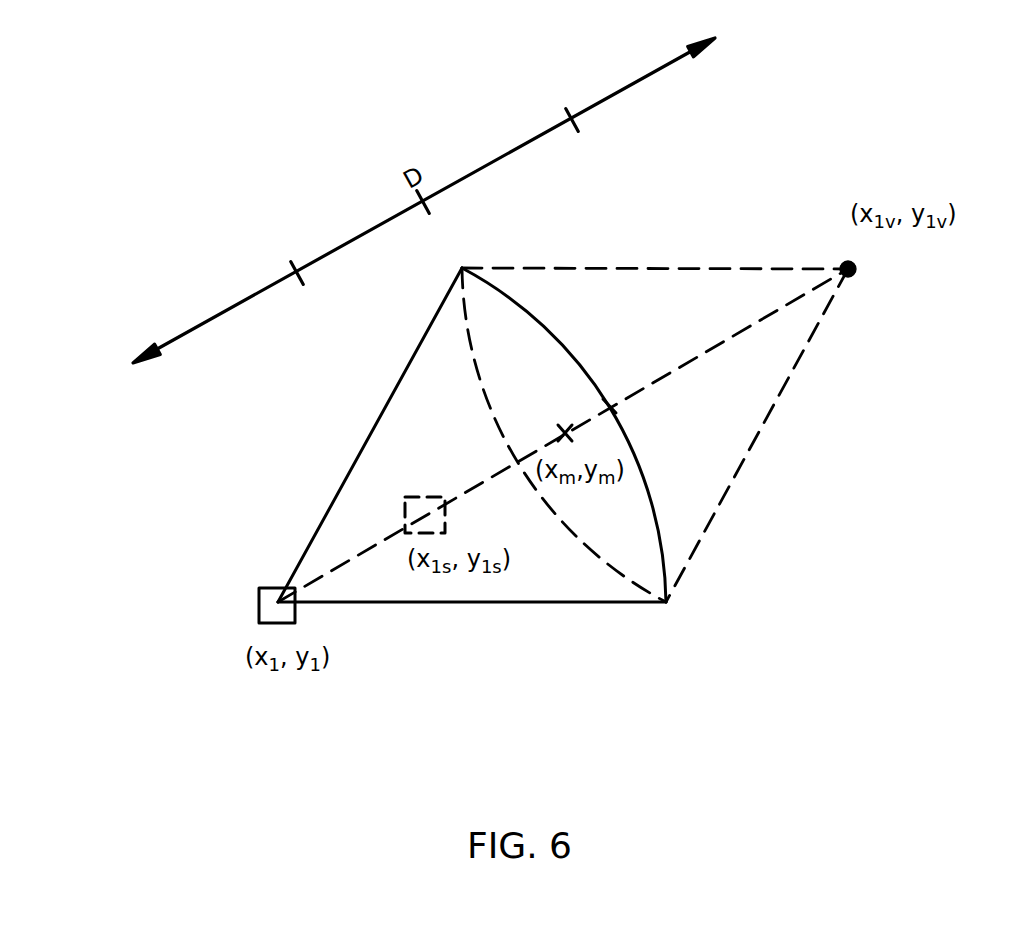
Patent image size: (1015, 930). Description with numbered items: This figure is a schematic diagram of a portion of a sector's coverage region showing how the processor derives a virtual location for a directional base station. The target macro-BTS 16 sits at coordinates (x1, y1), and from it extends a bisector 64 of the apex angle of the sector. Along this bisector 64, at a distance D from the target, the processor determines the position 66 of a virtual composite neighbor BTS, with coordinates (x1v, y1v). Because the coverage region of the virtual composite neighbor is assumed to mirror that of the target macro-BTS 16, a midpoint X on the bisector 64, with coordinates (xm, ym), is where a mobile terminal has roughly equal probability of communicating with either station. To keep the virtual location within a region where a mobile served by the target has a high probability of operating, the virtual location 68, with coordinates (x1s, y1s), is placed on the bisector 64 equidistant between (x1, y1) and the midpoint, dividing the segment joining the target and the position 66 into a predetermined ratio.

The target macro-BTS 16 is at (278, 600).
The bisector 64 is at (645, 385).
The position of virtual composite neighbor BTS 66 is at (856, 270).
The virtual location 68 is at (423, 497).